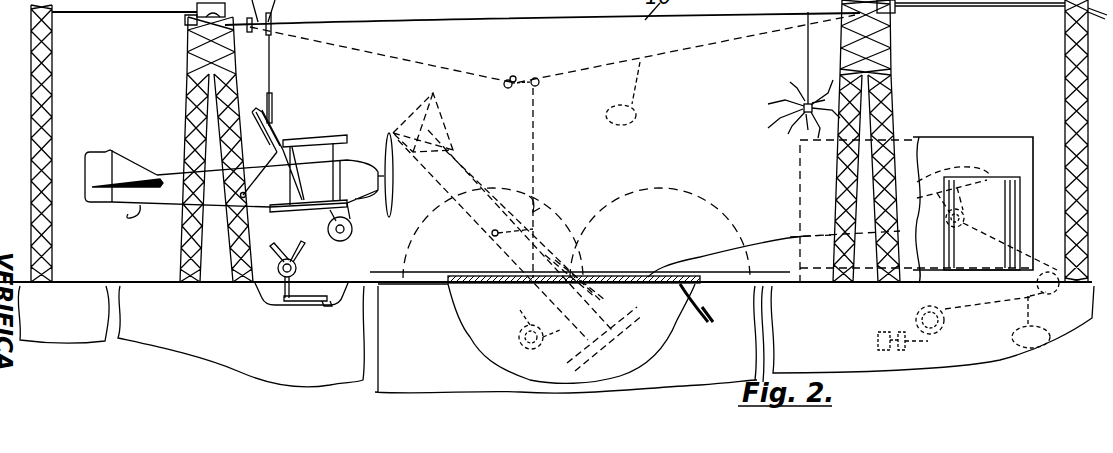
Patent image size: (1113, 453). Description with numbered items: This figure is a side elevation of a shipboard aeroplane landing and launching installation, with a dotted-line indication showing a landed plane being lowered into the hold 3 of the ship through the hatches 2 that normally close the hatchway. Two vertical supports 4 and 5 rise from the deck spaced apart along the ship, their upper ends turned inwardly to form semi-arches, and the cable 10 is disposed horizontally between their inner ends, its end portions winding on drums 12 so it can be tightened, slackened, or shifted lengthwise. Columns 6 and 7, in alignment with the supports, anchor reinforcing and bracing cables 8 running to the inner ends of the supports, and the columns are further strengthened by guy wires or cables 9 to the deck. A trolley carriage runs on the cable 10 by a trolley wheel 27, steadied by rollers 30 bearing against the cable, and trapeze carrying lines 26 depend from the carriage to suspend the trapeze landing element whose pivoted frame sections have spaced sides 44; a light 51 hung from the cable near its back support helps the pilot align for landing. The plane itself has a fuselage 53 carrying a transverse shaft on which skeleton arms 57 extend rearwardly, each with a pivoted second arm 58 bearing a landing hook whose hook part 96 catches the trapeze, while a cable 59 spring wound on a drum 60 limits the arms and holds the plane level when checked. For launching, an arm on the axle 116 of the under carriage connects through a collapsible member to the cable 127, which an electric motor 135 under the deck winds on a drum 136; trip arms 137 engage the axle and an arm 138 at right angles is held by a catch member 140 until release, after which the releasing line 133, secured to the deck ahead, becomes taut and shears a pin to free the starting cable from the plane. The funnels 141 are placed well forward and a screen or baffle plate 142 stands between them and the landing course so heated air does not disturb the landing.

The hatches 2 is at (521, 288).
The hold 3 is at (650, 337).
The vertical support 4 is at (190, 78).
The vertical support 5 is at (891, 58).
The column 6 is at (33, 80).
The column 7 is at (1064, 50).
The reinforcing and bracing cables 8 is at (148, 14).
The guy wires or cables 9 is at (1064, 22).
The cable 10 is at (621, 115).
The drums 12 is at (1035, 310).
The trapeze carrying lines 26 is at (272, 63).
The trolley wheel 27 is at (272, 22).
The rollers 30 is at (250, 32).
The sides 44 is at (276, 115).
The light 51 is at (800, 112).
The aeroplane fuselage 53 is at (172, 198).
The skeleton arm 57 is at (298, 177).
The second arm 58 is at (270, 140).
The cable 59 is at (247, 195).
The drum 60 is at (240, 195).
The hook part 96 is at (274, 112).
The axle 116 is at (262, 285).
The cable 127 is at (365, 272).
The releasing line 133 is at (752, 241).
The electric motor 135 is at (886, 330).
The drum 136 is at (950, 322).
The arms 137 is at (283, 290).
The arm 138 is at (307, 302).
The catch member 140 is at (330, 307).
The funnels 141 is at (996, 192).
The screen or baffle plate 142 is at (960, 140).